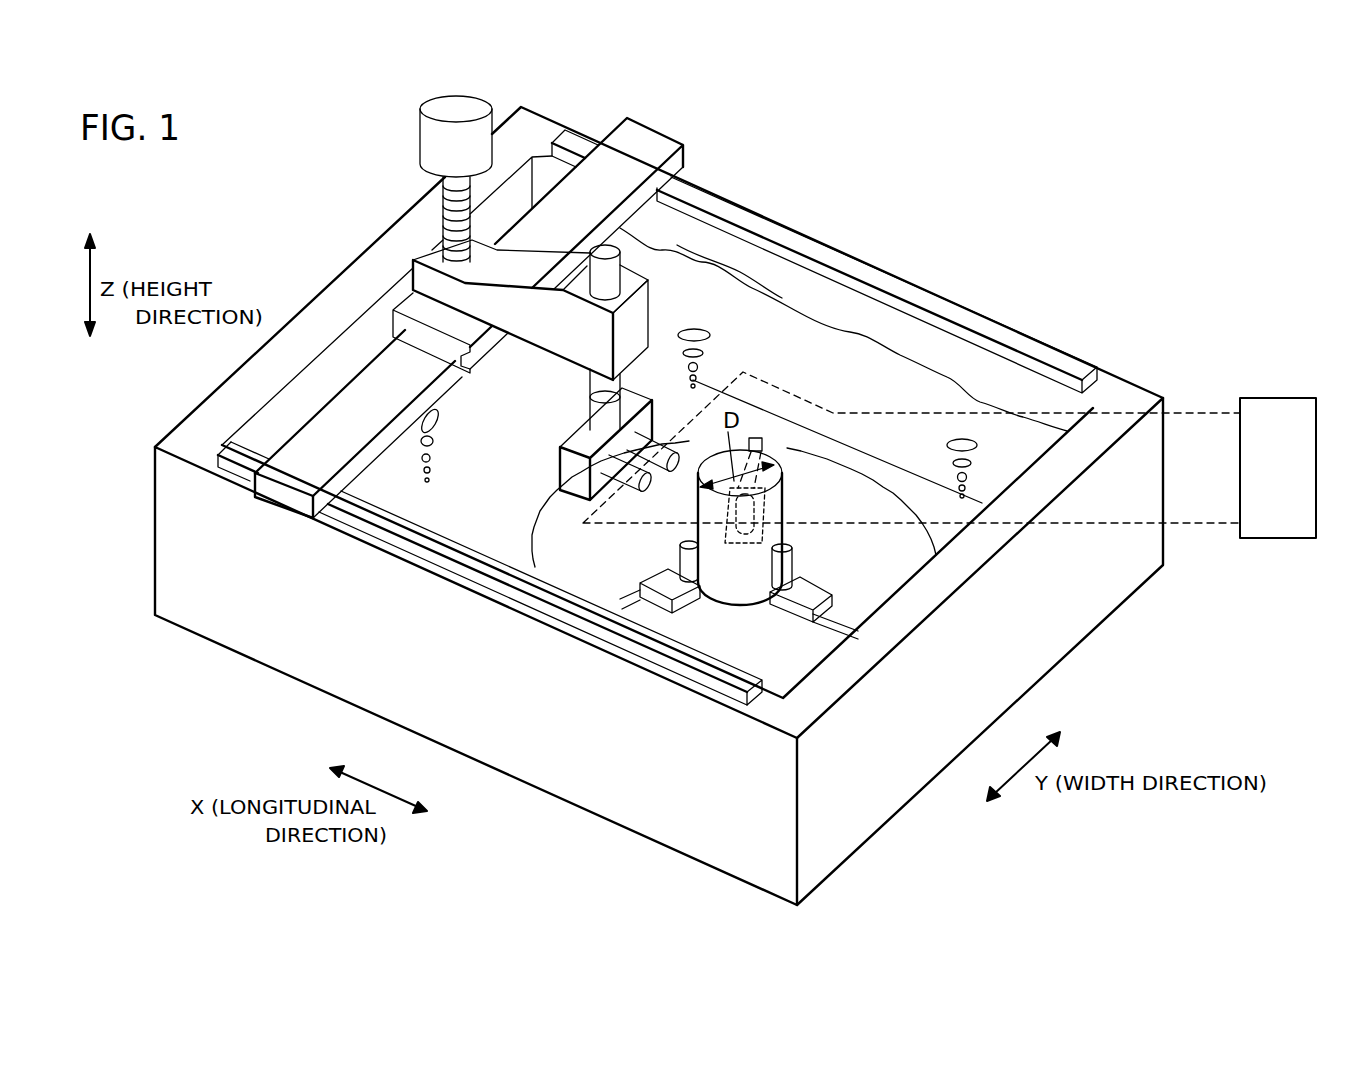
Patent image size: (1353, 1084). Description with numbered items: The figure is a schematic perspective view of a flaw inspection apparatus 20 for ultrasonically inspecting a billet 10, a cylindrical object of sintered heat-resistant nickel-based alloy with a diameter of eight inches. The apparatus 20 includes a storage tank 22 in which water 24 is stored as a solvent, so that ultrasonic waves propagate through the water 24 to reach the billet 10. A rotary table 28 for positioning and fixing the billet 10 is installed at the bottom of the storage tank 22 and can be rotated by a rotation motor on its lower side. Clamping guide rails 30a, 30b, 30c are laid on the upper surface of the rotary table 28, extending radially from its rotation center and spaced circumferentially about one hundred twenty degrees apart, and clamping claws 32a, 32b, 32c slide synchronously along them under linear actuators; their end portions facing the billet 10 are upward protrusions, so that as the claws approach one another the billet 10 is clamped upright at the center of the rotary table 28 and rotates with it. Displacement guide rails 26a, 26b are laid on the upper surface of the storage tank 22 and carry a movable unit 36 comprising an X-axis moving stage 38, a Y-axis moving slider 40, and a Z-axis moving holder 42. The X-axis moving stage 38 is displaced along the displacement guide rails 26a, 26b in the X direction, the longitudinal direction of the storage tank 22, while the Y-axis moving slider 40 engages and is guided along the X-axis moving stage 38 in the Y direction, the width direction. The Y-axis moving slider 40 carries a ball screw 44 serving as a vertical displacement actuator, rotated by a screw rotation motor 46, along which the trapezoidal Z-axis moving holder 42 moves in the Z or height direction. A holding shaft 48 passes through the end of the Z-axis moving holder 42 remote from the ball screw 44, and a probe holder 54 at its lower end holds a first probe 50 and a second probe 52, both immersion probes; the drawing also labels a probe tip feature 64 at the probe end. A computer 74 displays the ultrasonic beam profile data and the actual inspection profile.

The billet 10 is at (737, 592).
The flaw inspection apparatus 20 is at (1175, 164).
The storage tank 22 is at (1130, 578).
The water 24 is at (867, 340).
The displacement guide rail 26a is at (720, 687).
The displacement guide rail 26b is at (1045, 350).
The rotary table 28 is at (538, 533).
The clamping guide rail 30a is at (597, 593).
The clamping guide rail 30b is at (759, 437).
The clamping guide rail 30c is at (828, 621).
The clamping claw 32a is at (690, 593).
The clamping claw 32b is at (766, 512).
The clamping claw 32c is at (817, 597).
The movable unit 36 is at (645, 261).
The X-axis moving stage 38 is at (313, 387).
The Y-axis moving slider 40 is at (412, 307).
The Z-axis moving holder 42 is at (640, 309).
The ball screw 44 is at (442, 209).
The screw rotation motor 46 is at (426, 142).
The holding shaft 48 is at (602, 282).
The first probe 50 is at (633, 482).
The second probe 52 is at (637, 440).
The probe holder 54 is at (565, 475).
The probe tip 64 is at (668, 470).
The computer 74 is at (1295, 397).